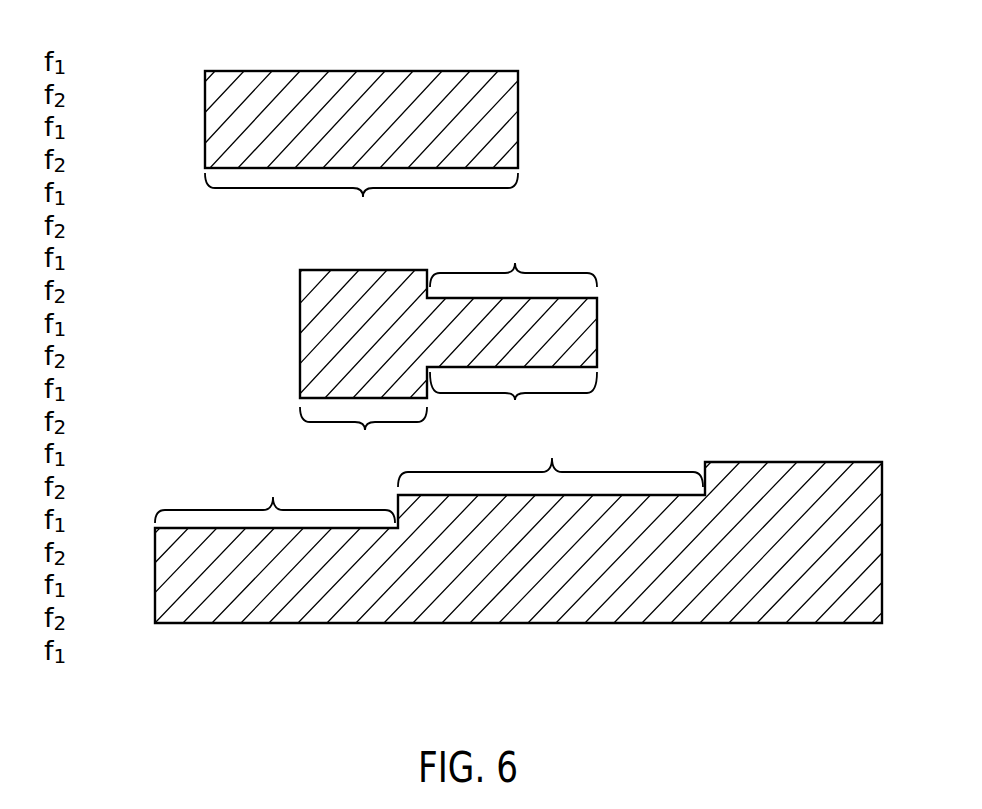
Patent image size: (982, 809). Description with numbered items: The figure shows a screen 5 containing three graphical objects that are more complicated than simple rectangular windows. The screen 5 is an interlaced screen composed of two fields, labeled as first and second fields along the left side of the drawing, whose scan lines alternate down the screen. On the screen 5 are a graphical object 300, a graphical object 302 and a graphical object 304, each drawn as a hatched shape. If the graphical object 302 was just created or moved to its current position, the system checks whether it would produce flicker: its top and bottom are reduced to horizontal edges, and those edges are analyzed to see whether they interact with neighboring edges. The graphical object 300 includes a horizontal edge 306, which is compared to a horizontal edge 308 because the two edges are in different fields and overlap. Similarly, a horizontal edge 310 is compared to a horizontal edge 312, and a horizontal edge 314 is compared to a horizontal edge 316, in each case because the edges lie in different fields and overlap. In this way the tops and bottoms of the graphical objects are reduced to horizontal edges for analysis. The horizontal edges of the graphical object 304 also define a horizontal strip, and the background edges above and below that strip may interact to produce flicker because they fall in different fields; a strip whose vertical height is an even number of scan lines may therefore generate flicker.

The screen 5 is at (803, 21).
The graphical object 300 is at (458, 115).
The graphical object 302 is at (368, 335).
The graphical object 304 is at (803, 593).
The horizontal edge 306 is at (361, 203).
The horizontal edge 308 is at (513, 259).
The horizontal edge 310 is at (363, 436).
The horizontal edge 312 is at (275, 496).
The horizontal edge 314 is at (513, 404).
The horizontal edge 316 is at (550, 460).